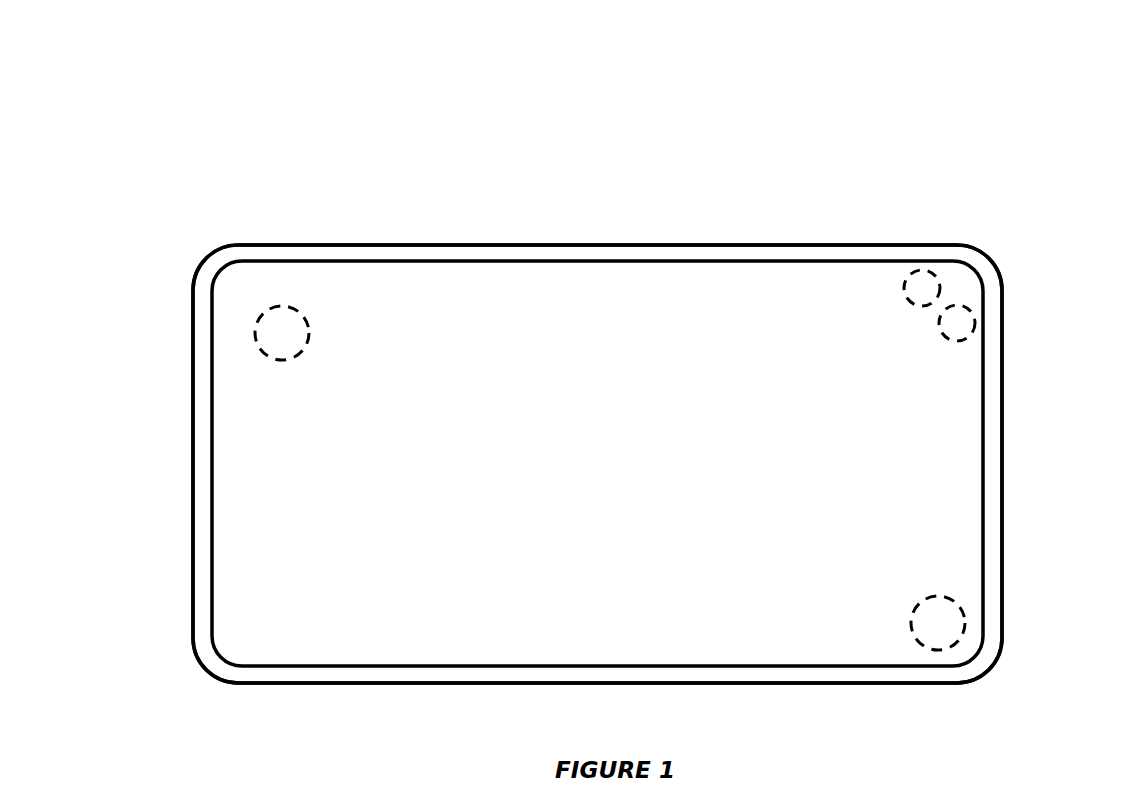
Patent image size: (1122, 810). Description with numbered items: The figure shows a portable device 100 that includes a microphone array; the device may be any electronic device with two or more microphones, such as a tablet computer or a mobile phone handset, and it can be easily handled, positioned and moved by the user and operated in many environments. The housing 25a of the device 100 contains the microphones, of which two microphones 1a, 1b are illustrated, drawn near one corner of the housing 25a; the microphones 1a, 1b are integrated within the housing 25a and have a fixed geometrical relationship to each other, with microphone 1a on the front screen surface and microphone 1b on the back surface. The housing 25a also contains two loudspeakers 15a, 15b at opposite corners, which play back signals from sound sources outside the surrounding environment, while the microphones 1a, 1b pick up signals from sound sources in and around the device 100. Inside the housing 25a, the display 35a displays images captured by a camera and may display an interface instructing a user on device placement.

The portable device 100 is at (1042, 110).
The housing 25a is at (388, 690).
The display 35a is at (250, 618).
The loudspeaker 15a is at (278, 320).
The loudspeaker 15b is at (942, 626).
The microphone 1a is at (924, 283).
The microphone 1b is at (958, 316).